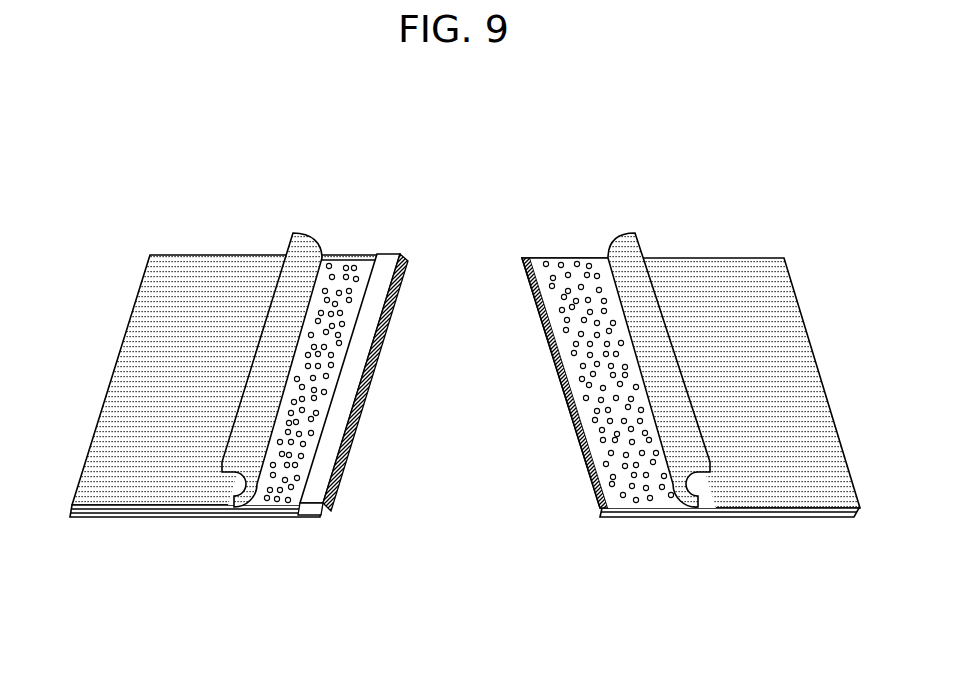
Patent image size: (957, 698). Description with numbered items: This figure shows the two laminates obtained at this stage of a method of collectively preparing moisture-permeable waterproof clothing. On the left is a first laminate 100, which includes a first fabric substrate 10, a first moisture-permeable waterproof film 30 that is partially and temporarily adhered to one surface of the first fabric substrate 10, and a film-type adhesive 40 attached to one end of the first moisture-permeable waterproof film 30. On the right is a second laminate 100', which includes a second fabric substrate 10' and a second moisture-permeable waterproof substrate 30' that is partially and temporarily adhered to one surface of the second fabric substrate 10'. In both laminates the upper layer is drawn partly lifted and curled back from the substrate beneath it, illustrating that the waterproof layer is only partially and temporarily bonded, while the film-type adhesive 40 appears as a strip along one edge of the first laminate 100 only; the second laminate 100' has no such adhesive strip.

The first laminate 100 is at (251, 344).
The second laminate 100' is at (691, 344).
The first fabric substrate 10 is at (235, 416).
The second fabric substrate 10' is at (691, 417).
The first moisture-permeable waterproof film 30 is at (303, 418).
The second moisture-permeable waterproof substrate 30' is at (619, 417).
The film-type adhesive 40 is at (350, 383).